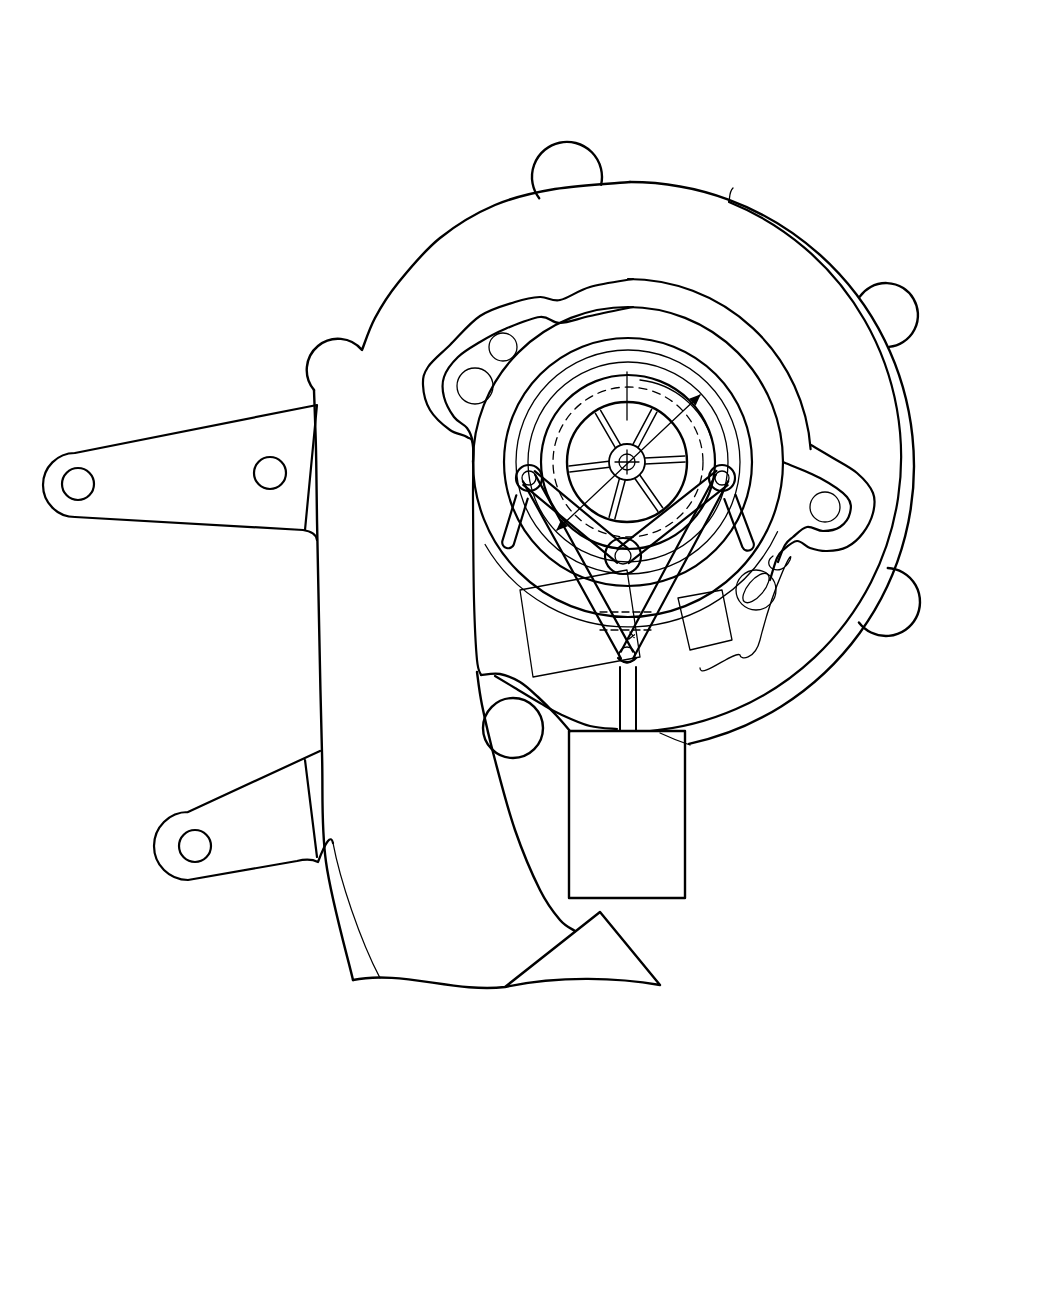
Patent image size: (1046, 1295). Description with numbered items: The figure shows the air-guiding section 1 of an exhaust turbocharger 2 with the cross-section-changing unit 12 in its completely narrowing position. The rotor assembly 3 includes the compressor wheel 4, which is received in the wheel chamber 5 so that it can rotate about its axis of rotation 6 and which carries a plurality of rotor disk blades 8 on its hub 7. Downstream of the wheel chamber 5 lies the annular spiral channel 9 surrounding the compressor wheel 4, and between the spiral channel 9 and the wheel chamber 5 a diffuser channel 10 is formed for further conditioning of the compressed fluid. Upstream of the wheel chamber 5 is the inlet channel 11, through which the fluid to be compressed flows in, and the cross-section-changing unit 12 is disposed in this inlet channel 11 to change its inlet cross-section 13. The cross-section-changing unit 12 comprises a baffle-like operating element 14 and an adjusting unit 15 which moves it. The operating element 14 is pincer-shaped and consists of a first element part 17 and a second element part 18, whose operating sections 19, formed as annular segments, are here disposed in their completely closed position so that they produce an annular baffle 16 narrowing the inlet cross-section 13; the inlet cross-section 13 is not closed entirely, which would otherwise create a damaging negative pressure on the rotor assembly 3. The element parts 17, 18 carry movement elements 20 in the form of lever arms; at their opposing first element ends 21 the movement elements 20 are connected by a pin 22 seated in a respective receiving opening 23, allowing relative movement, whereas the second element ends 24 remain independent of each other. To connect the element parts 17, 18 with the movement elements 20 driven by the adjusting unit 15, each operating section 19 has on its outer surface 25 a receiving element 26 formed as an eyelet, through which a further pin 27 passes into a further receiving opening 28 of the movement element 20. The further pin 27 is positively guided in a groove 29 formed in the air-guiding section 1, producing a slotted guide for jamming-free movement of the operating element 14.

The air-guiding section 1 is at (733, 186).
The exhaust turbocharger 2 is at (885, 157).
The rotor assembly 3 is at (639, 396).
The compressor wheel 4 is at (640, 519).
The wheel chamber 5 is at (617, 413).
The axis of rotation 6 is at (647, 463).
The hub 7 is at (576, 445).
The rotor disk blades 8 is at (580, 428).
The spiral channel 9 is at (501, 215).
The diffuser channel 10 is at (588, 324).
The inlet channel 11 is at (695, 392).
The cross-section-changing unit 12 is at (718, 762).
The inlet cross-section 13 is at (708, 392).
The operating element 14 is at (740, 385).
The adjusting unit 15 is at (644, 806).
The annular baffle 16 is at (702, 426).
The first element part 17 is at (745, 452).
The second element part 18 is at (530, 431).
The operating sections 19 is at (650, 462).
The movement elements 20 is at (657, 598).
The first element ends 21 is at (618, 588).
The pin 22 is at (552, 573).
The receiving opening 23 is at (605, 586).
The second element ends 24 is at (625, 371).
The outer surface 25 is at (718, 428).
The receiving element 26 is at (838, 491).
The further pin 27 is at (522, 477).
The further receiving opening 28 is at (512, 511).
The groove 29 is at (773, 556).